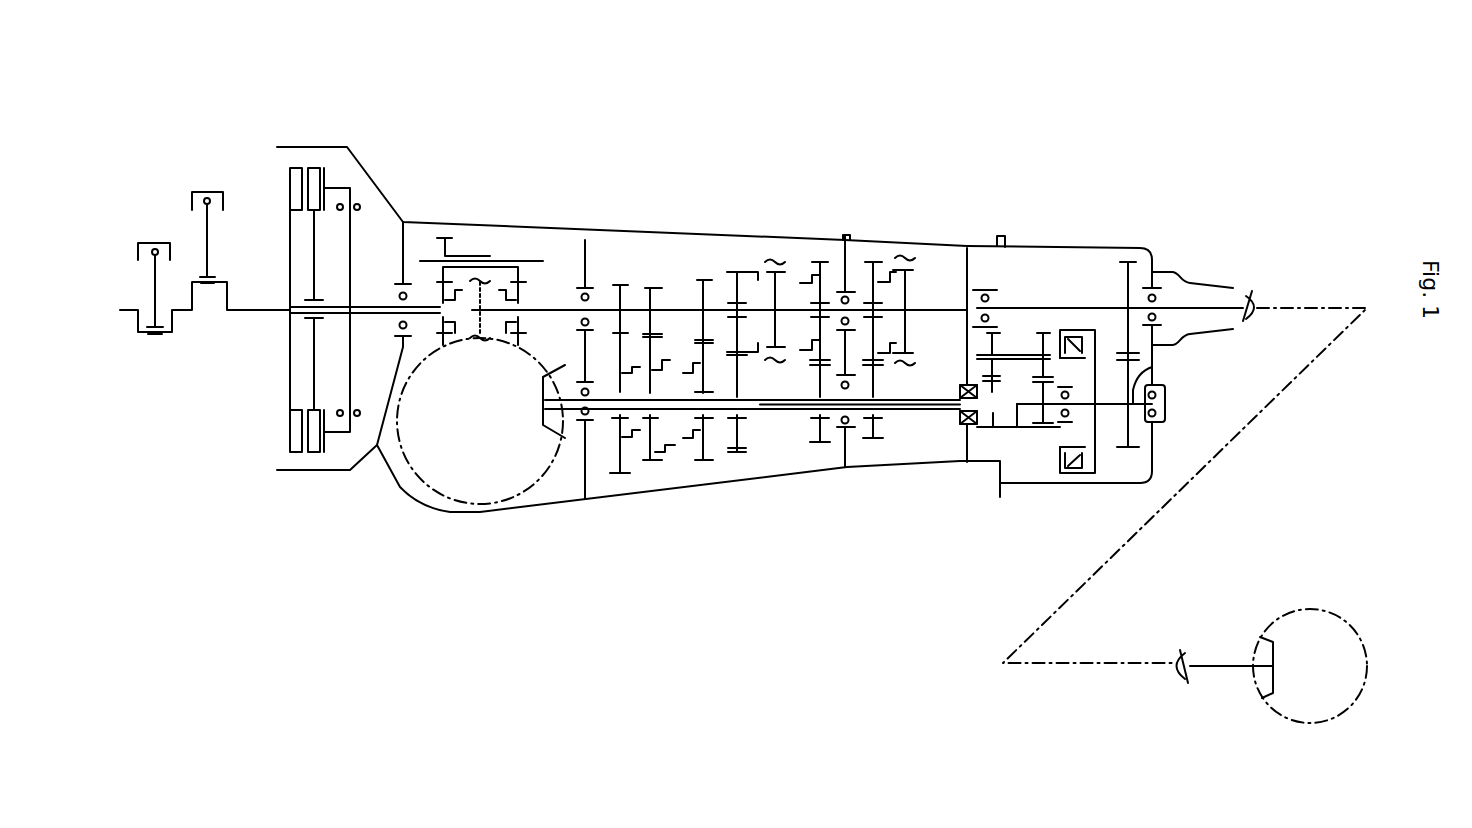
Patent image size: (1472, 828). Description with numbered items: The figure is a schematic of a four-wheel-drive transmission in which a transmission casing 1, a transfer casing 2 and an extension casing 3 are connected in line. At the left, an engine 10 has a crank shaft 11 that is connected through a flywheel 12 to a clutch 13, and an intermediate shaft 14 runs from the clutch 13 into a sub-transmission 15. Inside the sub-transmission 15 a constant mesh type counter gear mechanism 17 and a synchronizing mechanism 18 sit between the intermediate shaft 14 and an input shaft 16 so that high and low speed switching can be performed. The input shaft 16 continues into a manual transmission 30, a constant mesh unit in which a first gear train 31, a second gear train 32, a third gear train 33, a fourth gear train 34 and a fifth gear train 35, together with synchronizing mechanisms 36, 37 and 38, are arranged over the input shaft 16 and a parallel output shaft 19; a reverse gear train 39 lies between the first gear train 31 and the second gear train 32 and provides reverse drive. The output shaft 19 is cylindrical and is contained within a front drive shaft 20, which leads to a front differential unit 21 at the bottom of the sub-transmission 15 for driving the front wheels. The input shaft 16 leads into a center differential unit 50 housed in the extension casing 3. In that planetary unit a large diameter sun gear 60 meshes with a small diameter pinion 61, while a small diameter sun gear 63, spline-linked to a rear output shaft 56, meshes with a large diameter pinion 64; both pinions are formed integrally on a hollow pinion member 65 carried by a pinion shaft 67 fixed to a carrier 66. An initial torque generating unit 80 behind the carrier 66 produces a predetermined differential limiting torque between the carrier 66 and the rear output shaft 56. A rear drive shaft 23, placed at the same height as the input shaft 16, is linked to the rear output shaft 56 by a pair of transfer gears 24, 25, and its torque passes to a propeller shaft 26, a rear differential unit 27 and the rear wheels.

The transmission casing 1 is at (557, 225).
The transfer casing 2 is at (937, 245).
The extension casing 3 is at (1070, 246).
The engine 10 is at (163, 178).
The crank shaft 11 is at (242, 312).
The flywheel 12 is at (287, 185).
The clutch 13 is at (312, 170).
The intermediate shaft 14 is at (367, 303).
The sub-transmission 15 is at (476, 226).
The input shaft 16 is at (675, 308).
The constant mesh type counter gear mechanism 17 is at (443, 236).
The synchronizing mechanism 18 is at (487, 277).
The output shaft 19 is at (777, 411).
The front drive shaft 20 is at (760, 403).
The front differential unit 21 is at (531, 490).
The rear drive shaft 23 is at (1088, 302).
The transfer gear 24 is at (1130, 440).
The transfer gear 25 is at (1127, 271).
The propeller shaft 26 is at (1320, 307).
The rear differential unit 27 is at (1323, 608).
The manual transmission 30 is at (738, 266).
The first gear train 31 is at (620, 285).
The second gear train 32 is at (703, 279).
The third gear train 33 is at (742, 260).
The fourth gear train 34 is at (818, 261).
The fifth gear train 35 is at (873, 261).
The synchronizing mechanism 36 is at (665, 447).
The synchronizing mechanism 37 is at (777, 260).
The synchronizing mechanism 38 is at (910, 257).
The reverse gear train 39 is at (652, 288).
The center differential unit 50 is at (1007, 454).
The rear output shaft 56 is at (1153, 368).
The large diameter sun gear 60 is at (968, 474).
The small diameter pinion 61 is at (1024, 350).
The small diameter sun gear 63 is at (1047, 430).
The large diameter pinion 64 is at (1050, 332).
The hollow pinion member 65 is at (1020, 353).
The carrier 66 is at (1037, 430).
The pinion shaft 67 is at (985, 362).
The initial torque generating unit 80 is at (1087, 483).